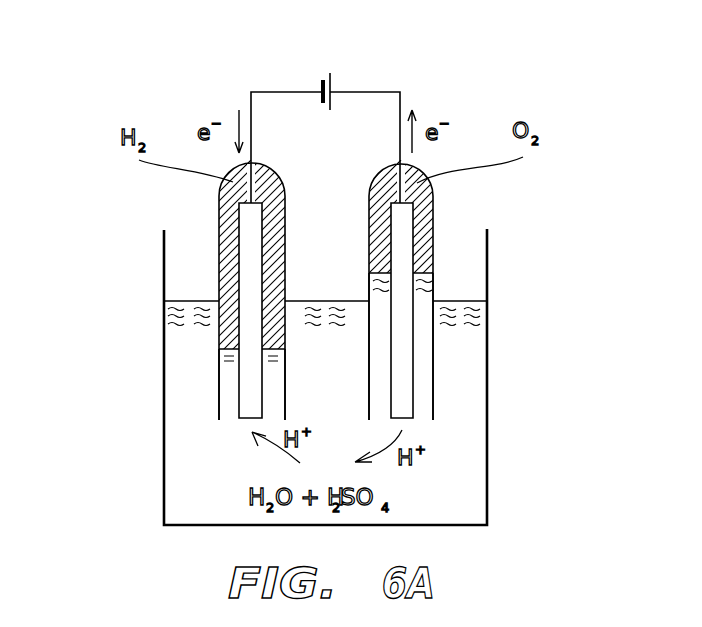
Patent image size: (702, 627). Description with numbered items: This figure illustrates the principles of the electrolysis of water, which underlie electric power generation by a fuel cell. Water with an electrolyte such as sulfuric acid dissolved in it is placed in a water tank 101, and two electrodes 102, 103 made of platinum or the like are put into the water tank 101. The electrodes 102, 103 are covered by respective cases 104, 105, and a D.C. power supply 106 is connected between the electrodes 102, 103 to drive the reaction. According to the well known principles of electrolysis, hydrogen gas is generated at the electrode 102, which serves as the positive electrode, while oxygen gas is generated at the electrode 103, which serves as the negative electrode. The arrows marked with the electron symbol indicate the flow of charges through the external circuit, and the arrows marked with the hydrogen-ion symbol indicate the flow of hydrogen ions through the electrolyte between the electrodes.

The water tank 101 is at (487, 258).
The electrode 102 is at (415, 216).
The electrode 103 is at (233, 220).
The case 104 is at (435, 370).
The case 105 is at (217, 395).
The D.C. power supply 106 is at (347, 55).